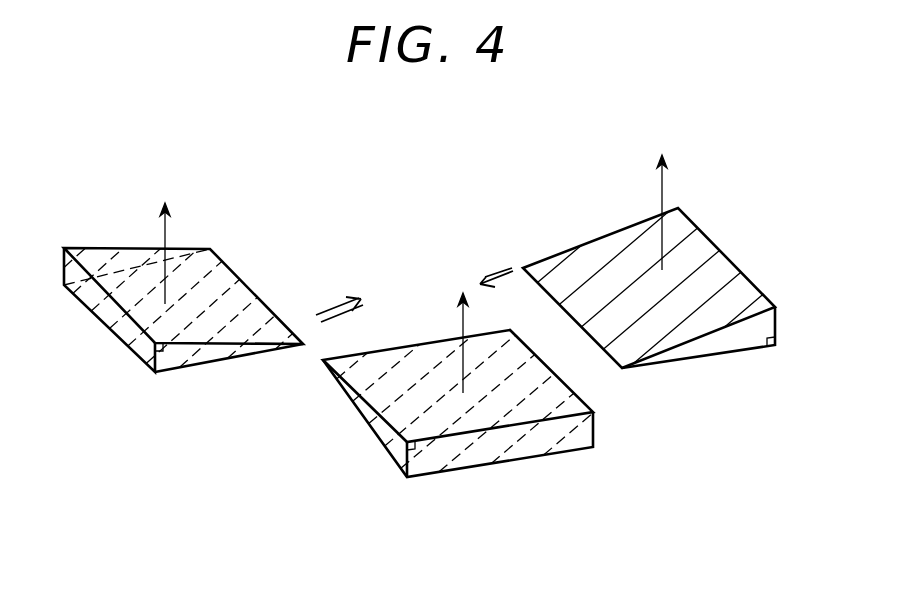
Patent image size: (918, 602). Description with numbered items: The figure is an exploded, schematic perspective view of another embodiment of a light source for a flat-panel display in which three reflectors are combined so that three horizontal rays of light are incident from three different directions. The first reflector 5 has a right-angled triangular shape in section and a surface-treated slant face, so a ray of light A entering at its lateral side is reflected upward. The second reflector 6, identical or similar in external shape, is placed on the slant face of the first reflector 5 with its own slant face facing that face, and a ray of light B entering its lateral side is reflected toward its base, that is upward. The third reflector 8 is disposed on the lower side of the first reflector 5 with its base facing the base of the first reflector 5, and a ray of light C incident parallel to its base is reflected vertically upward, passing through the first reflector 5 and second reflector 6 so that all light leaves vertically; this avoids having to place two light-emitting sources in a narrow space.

The second reflector 6 is at (120, 342).
The third reflector 8 is at (465, 463).
The first reflector 5 is at (710, 343).
The ray of light A is at (662, 270).
The ray of light B is at (165, 305).
The ray of light C is at (463, 393).